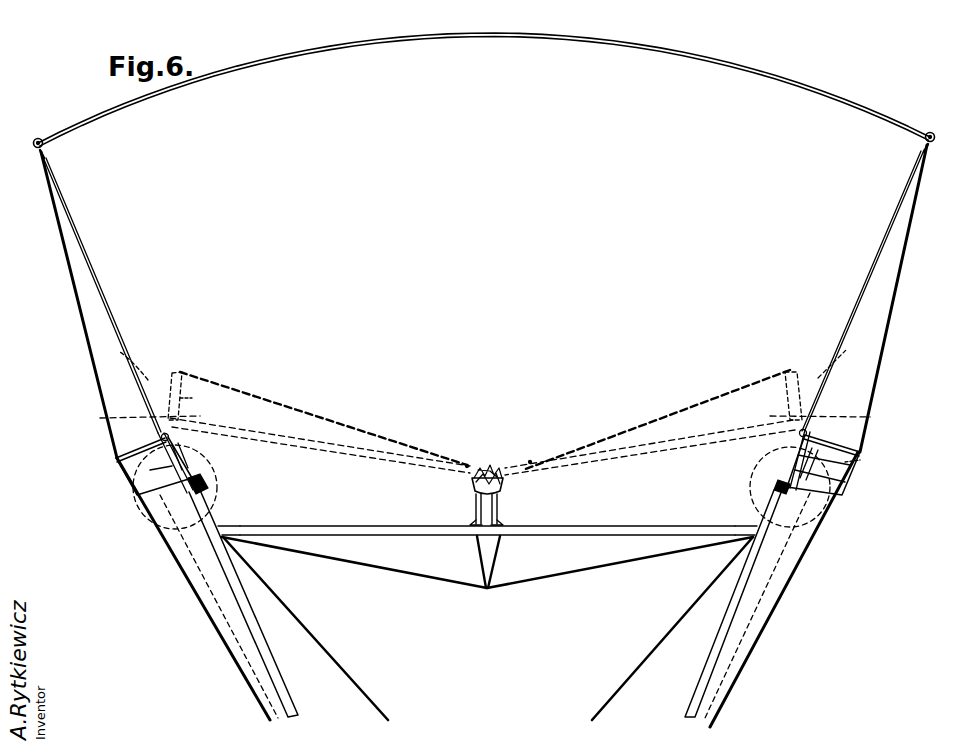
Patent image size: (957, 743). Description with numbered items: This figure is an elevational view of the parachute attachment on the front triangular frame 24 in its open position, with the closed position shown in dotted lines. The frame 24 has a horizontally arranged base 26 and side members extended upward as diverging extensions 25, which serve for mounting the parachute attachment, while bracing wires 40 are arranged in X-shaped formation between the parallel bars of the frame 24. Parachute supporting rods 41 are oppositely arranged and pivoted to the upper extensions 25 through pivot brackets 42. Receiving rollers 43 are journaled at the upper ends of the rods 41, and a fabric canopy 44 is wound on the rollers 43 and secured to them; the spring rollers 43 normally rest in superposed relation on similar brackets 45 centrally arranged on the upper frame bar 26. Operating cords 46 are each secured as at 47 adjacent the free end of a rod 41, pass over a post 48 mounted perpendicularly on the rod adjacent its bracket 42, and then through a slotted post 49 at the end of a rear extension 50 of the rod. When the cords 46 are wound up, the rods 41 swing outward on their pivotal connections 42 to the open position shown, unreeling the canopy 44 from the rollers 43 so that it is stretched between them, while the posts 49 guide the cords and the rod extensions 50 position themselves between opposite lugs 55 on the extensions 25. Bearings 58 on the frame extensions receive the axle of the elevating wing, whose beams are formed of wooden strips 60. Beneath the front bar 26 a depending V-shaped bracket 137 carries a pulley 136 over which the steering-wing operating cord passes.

The fabric canopy 44 is at (487, 34).
The receiving rollers 43 is at (34, 141).
The cord securing point 47 is at (48, 172).
The parachute supporting rods 41 is at (108, 300).
The operating cords 46 is at (85, 340).
The slotted post 49 is at (182, 372).
The rear extension 50 is at (480, 442).
The post 48 is at (116, 458).
The wooden strips 60 is at (150, 468).
The pivot brackets 42 is at (184, 450).
The lugs 55 is at (190, 470).
The bearings 58 is at (206, 486).
The diverging extensions 25 is at (236, 520).
The base 26 is at (342, 526).
The pulley 136 is at (487, 562).
The V-shaped bracket 137 is at (493, 572).
The brackets 45 is at (476, 506).
The triangular frame 24 is at (270, 668).
The bracing wires 40 is at (343, 662).